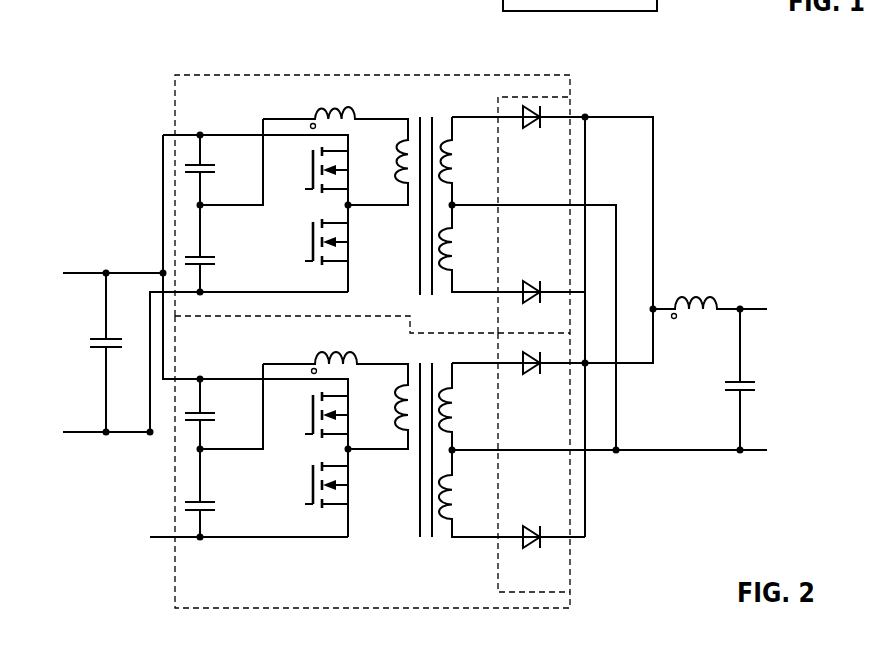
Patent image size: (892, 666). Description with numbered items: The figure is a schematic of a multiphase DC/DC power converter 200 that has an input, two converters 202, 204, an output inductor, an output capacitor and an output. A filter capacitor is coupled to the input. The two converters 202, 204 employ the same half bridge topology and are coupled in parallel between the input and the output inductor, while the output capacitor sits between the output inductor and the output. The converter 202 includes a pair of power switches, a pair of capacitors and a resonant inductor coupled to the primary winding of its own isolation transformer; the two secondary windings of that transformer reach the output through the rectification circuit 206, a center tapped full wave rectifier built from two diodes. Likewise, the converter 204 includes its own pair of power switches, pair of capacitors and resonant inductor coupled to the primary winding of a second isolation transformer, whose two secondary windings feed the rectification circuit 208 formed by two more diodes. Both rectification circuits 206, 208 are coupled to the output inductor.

The multiphase DC/DC power converter 200 is at (186, 28).
The converter 202 is at (243, 75).
The converter 204 is at (255, 610).
The rectification circuit 206 is at (548, 96).
The rectification circuit 208 is at (548, 592).